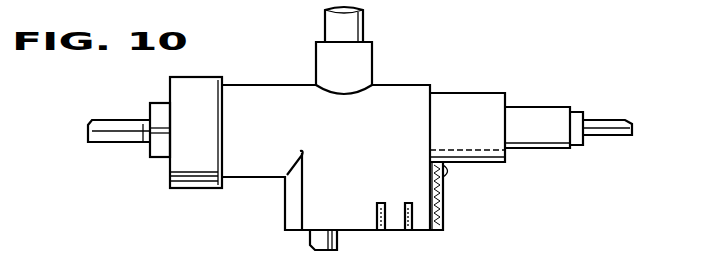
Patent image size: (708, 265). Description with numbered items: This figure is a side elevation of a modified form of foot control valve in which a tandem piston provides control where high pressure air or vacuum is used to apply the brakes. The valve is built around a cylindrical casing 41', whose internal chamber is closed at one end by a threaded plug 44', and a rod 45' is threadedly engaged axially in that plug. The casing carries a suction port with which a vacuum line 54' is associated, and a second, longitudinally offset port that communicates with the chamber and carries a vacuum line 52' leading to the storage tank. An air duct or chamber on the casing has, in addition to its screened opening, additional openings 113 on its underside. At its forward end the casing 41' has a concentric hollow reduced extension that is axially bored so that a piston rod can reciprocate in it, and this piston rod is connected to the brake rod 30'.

The cylindrical casing 41' is at (376, 136).
The vacuum line 54' is at (371, 24).
The rod 45' is at (111, 150).
The threaded plug 44' is at (142, 156).
The brake rod 30' is at (610, 109).
The vacuum line 52' is at (291, 243).
The additional openings 113 is at (381, 232).